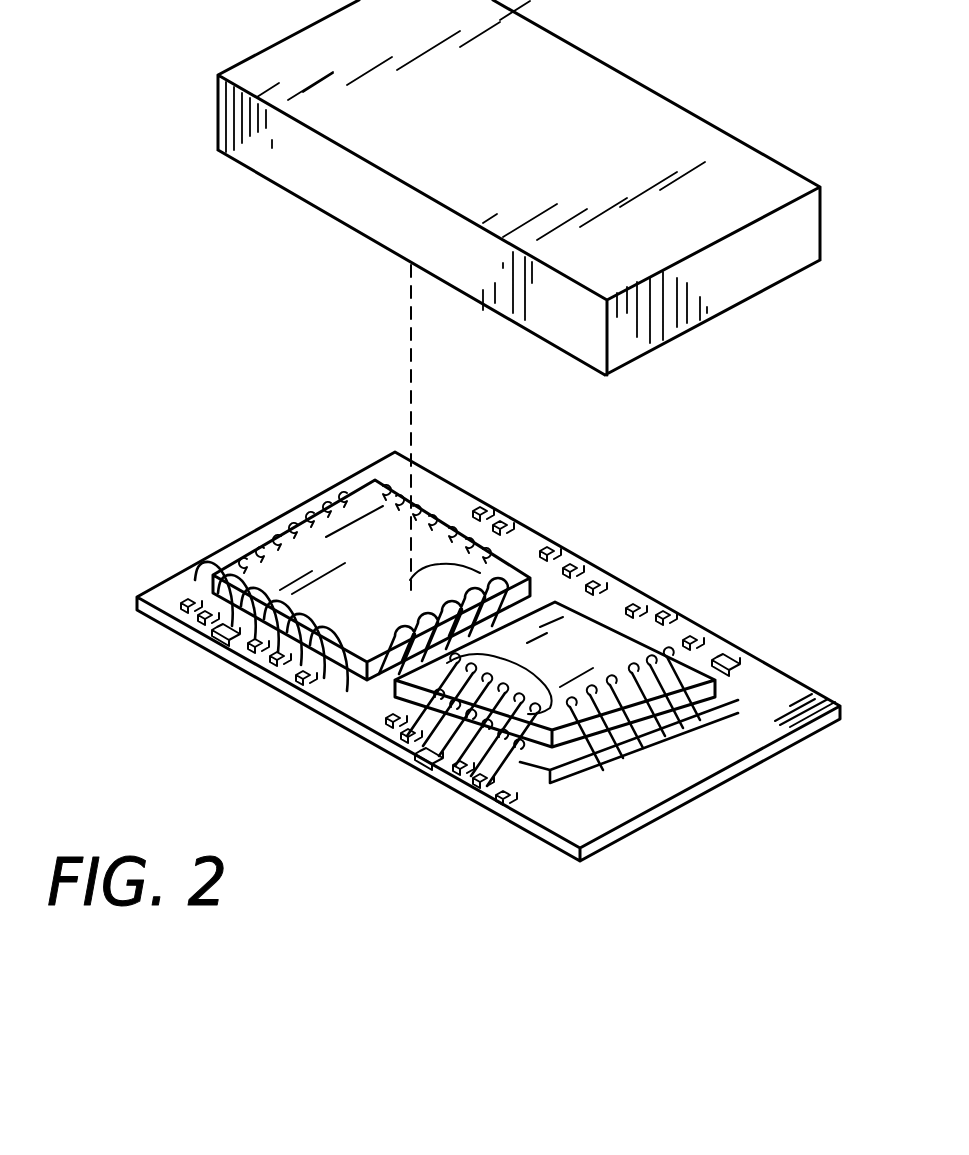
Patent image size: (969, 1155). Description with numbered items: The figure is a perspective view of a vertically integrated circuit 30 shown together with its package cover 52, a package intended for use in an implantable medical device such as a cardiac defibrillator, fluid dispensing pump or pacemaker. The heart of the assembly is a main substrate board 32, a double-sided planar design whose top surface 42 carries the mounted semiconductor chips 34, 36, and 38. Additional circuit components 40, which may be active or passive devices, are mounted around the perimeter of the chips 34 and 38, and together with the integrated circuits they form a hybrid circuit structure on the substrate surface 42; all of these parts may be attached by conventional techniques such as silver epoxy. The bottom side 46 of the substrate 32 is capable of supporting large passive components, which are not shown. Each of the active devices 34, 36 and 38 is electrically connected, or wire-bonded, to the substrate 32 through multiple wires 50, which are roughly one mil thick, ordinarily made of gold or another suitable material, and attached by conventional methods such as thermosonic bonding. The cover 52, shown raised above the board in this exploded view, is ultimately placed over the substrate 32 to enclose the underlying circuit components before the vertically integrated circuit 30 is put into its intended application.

The vertically integrated circuit 30 is at (720, 560).
The main substrate board 32 is at (678, 830).
The integrated circuit 34 is at (563, 753).
The integrated circuit 36 is at (717, 678).
The integrated circuit 38 is at (287, 577).
The circuit components 40 is at (764, 656).
The top surface 42 is at (760, 730).
The bottom side 46 is at (595, 898).
The wires 50 is at (378, 613).
The package cover 52 is at (560, 103).